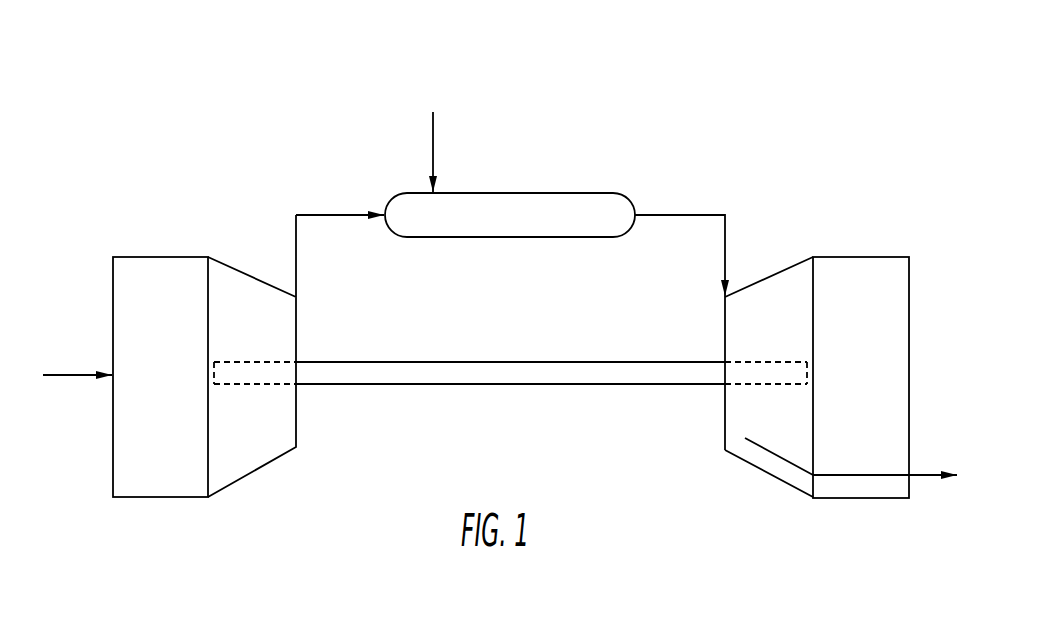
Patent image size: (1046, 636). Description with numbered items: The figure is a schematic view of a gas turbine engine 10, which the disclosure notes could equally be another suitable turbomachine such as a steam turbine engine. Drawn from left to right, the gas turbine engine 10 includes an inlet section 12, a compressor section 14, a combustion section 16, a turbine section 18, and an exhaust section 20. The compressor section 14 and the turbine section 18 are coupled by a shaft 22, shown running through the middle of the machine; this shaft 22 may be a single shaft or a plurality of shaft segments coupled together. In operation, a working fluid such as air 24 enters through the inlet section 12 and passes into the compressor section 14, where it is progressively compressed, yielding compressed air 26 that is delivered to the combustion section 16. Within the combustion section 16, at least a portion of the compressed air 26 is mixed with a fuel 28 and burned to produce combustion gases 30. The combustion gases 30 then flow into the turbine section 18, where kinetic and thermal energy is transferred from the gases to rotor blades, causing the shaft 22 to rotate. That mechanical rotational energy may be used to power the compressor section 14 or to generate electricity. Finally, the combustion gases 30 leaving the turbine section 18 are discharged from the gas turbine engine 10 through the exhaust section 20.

The gas turbine engine 10 is at (346, 117).
The inlet section 12 is at (163, 256).
The compressor section 14 is at (246, 273).
The combustion section 16 is at (567, 189).
The turbine section 18 is at (798, 262).
The exhaust section 20 is at (876, 256).
The shaft 22 is at (488, 387).
The air 24 is at (72, 371).
The compressed air 26 is at (325, 219).
The fuel 28 is at (439, 131).
The combustion gases 30 is at (691, 218).